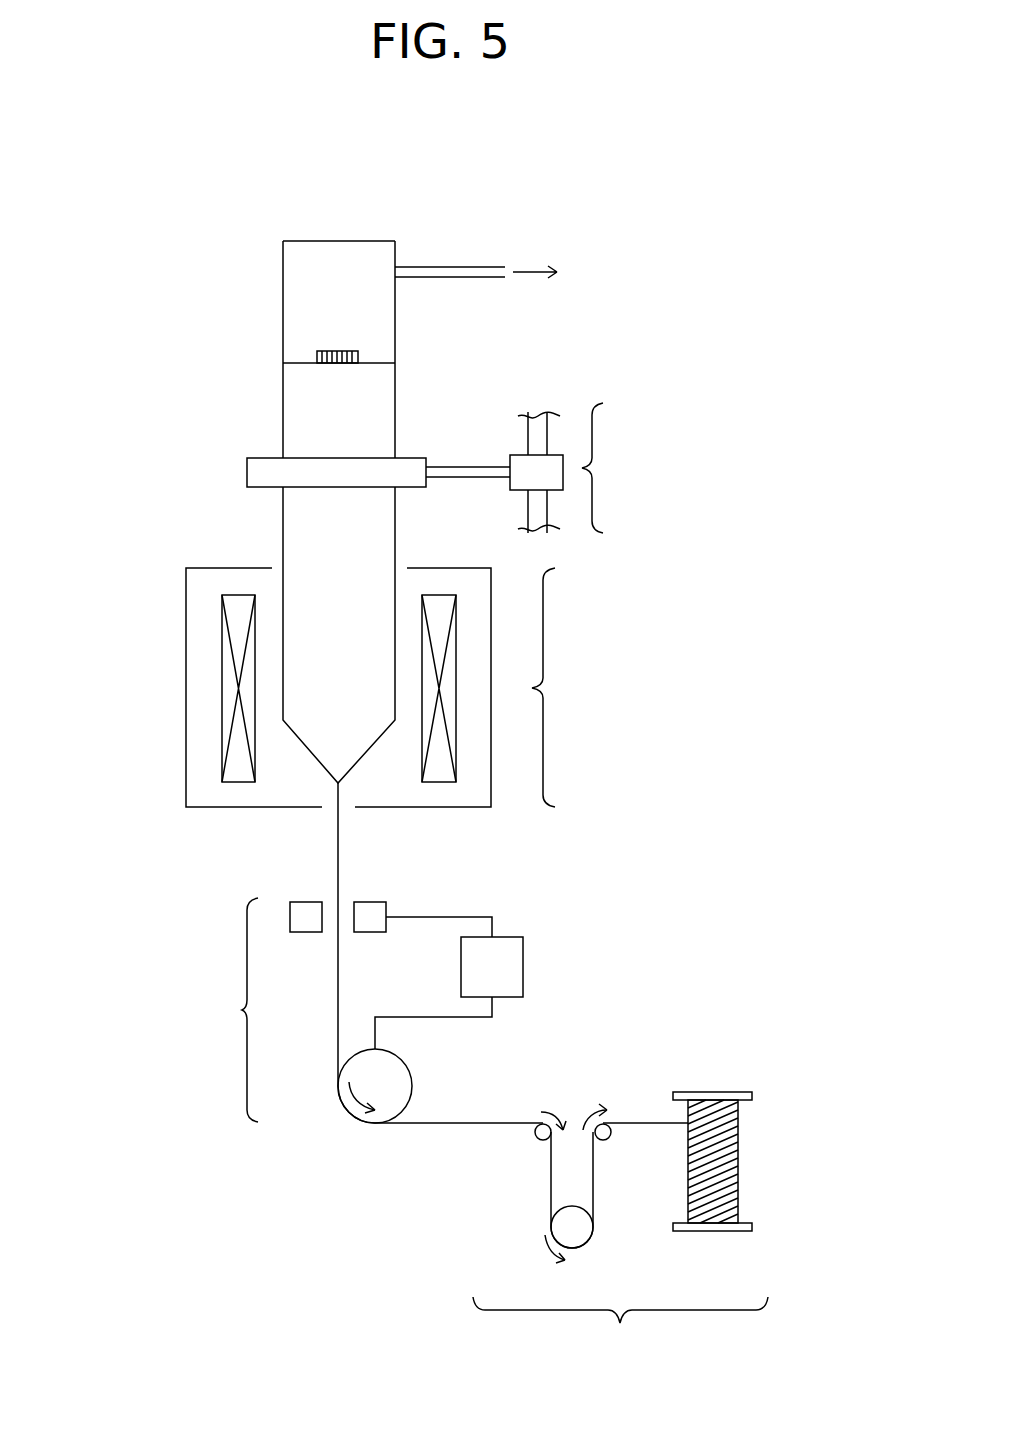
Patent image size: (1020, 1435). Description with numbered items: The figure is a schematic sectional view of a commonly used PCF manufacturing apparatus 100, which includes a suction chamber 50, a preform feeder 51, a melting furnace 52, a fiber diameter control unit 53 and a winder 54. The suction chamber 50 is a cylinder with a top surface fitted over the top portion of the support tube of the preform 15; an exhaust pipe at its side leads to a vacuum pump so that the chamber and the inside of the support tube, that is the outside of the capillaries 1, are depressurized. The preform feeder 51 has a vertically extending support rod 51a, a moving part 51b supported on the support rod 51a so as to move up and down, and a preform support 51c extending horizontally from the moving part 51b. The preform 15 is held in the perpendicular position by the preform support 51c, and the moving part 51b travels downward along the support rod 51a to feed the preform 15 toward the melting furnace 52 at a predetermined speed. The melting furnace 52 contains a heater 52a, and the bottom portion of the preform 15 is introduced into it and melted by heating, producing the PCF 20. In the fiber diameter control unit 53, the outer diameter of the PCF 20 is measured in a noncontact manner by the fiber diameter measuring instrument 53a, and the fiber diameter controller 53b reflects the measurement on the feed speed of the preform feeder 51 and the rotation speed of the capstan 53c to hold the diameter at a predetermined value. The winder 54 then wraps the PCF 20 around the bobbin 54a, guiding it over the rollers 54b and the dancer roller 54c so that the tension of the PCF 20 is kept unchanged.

The PCF manufacturing apparatus 100 is at (210, 197).
The capillaries 1 is at (326, 351).
The preform 15 is at (302, 427).
The PCF 20 is at (336, 843).
The suction chamber 50 is at (383, 320).
The preform feeder 51 is at (620, 468).
The support rod 51a is at (528, 440).
The moving part 51b is at (518, 490).
The preform support 51c is at (247, 473).
The melting furnace 52 is at (395, 687).
The heater 52a is at (228, 703).
The fiber diameter control unit 53 is at (220, 1010).
The fiber diameter measuring instrument 53a is at (370, 932).
The fiber diameter controller 53b is at (523, 965).
The capstan 53c is at (400, 1076).
The winder 54 is at (620, 1333).
The bobbin 54a is at (722, 1090).
The rollers 54b is at (538, 1142).
The dancer roller 54c is at (580, 1236).